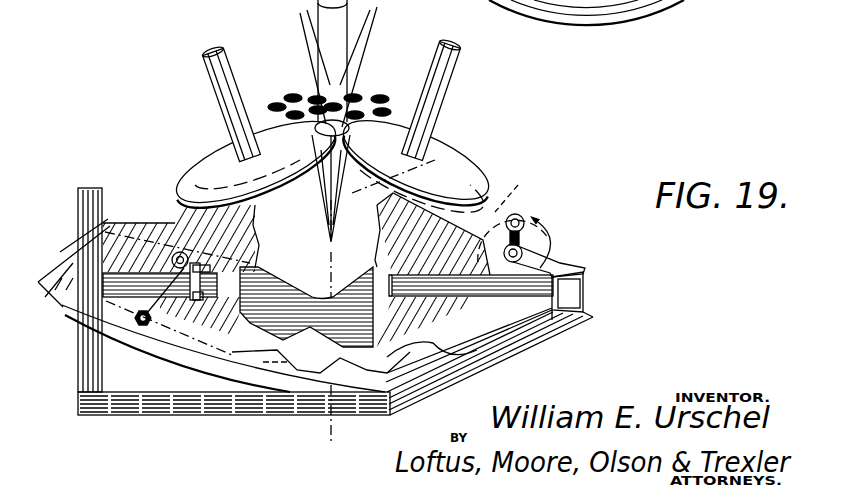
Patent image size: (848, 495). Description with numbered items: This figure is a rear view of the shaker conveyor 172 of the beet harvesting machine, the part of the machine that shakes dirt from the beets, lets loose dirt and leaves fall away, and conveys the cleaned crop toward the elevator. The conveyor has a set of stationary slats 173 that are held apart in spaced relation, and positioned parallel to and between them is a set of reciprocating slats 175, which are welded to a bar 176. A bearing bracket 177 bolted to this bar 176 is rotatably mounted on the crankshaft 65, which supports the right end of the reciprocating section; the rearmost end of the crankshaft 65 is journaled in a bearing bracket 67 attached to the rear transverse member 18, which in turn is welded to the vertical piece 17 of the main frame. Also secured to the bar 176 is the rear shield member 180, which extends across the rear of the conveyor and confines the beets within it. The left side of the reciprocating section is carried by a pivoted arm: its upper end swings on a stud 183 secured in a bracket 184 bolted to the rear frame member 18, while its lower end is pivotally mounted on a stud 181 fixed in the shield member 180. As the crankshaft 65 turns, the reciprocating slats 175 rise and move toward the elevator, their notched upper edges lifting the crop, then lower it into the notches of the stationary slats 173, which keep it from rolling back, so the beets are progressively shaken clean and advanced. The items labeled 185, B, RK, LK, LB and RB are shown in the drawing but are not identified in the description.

The vertical piece 17 is at (90, 188).
The rear shield member 180 is at (173, 221).
The stud 183 is at (177, 253).
The clamp 185 is at (178, 277).
The stud 181 is at (113, 340).
The shaker conveyor 172 is at (186, 381).
The reciprocating slats 175 is at (255, 345).
The bracket 184 is at (213, 260).
The stationary slats 173 is at (487, 357).
The rear transverse member 18 is at (550, 323).
The bar B is at (584, 288).
The bearing bracket 67 is at (553, 262).
The crankshaft 65 is at (524, 232).
The bearing bracket 177 is at (515, 205).
The bar 176 is at (519, 186).
The right knife disk RK is at (474, 157).
The left knife disk LK is at (197, 150).
The left bits LB is at (294, 82).
The right bits RB is at (386, 82).